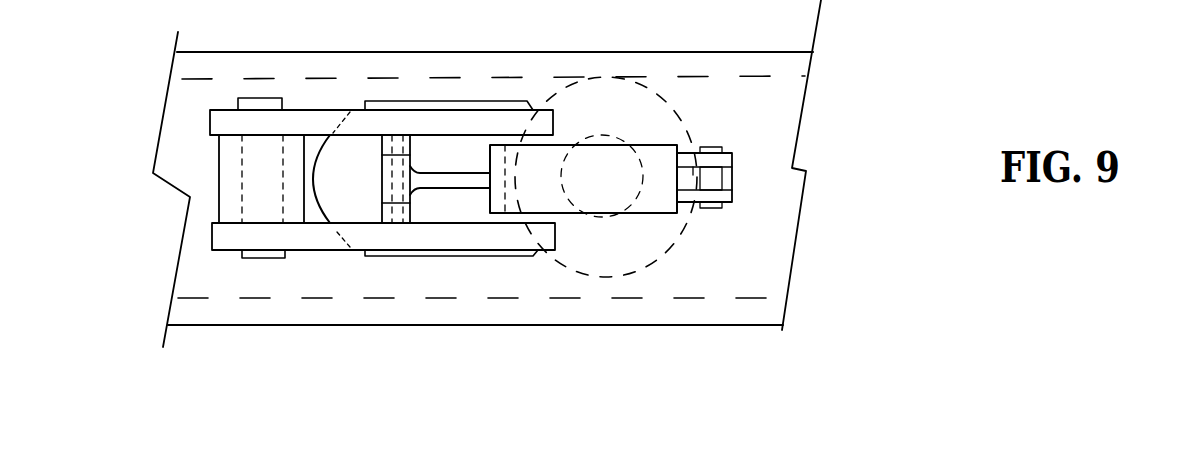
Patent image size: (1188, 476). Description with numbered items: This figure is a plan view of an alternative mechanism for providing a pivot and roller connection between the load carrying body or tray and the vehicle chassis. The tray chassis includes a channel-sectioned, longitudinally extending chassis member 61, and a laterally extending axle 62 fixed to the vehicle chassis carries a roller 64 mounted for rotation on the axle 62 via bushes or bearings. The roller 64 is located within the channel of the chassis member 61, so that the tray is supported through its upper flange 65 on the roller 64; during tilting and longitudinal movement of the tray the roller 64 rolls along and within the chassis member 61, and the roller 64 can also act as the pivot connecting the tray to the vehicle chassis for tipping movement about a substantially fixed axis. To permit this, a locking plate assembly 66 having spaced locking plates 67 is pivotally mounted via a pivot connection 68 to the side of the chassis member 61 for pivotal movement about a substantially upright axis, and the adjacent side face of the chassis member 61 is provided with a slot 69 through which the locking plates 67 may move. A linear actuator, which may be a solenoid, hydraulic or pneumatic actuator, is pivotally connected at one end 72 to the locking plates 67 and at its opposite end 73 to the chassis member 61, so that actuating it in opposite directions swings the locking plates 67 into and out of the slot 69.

The chassis member 61 is at (688, 216).
The axle 62 is at (600, 218).
The roller 64 is at (645, 100).
The upper flange 65 is at (498, 66).
The locking plate assembly 66 is at (382, 201).
The locking plate 67 is at (320, 128).
The pivot connection 68 is at (247, 84).
The slot 69 is at (437, 256).
The actuator end 72 is at (432, 204).
The actuator end 73 is at (752, 178).